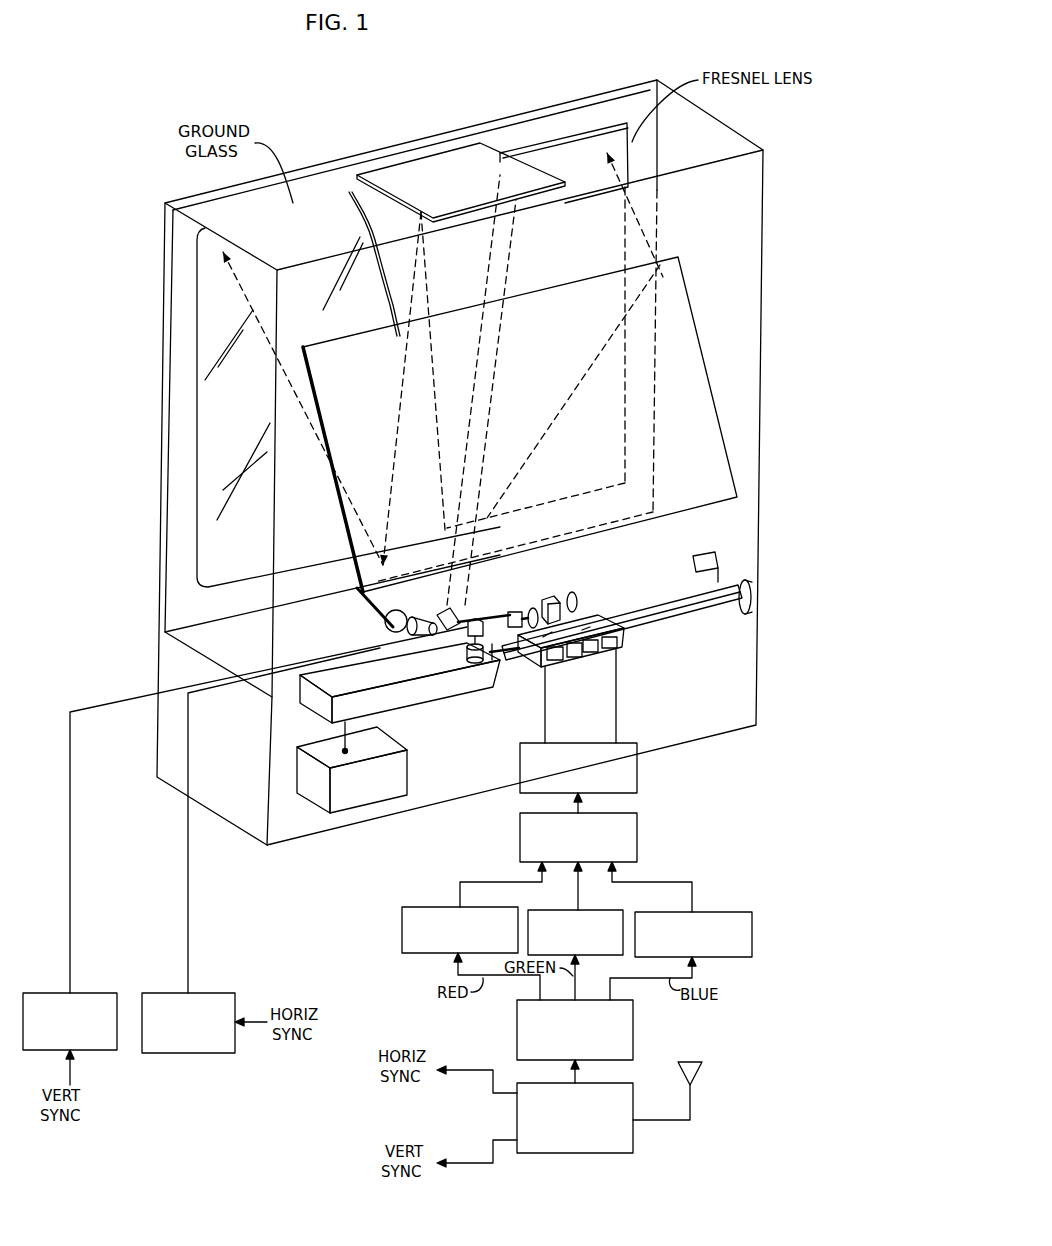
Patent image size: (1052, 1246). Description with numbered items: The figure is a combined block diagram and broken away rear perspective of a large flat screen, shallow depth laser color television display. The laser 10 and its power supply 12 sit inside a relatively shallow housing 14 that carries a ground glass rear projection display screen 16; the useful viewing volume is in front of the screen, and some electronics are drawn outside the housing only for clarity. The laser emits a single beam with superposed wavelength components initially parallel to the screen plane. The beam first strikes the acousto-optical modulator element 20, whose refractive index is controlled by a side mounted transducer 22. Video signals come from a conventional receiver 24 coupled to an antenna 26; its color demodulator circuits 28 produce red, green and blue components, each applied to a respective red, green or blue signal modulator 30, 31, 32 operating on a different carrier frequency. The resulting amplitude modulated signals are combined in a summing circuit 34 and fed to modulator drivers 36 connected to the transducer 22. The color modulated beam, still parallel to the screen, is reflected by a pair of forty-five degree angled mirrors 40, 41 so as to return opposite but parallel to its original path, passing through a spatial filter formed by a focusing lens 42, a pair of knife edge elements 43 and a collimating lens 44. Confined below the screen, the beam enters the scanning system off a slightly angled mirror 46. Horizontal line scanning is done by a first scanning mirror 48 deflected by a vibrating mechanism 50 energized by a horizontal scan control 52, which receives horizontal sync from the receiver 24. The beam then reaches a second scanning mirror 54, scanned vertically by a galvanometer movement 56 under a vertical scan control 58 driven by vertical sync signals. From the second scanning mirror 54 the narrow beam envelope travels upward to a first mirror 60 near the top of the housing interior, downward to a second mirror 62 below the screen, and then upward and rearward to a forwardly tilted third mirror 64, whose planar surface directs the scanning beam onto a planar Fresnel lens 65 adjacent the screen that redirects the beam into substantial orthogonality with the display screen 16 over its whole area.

The laser 10 is at (301, 706).
The power supply 12 is at (408, 786).
The housing 14 is at (164, 264).
The display screen 16 is at (325, 207).
The modulator element 20 is at (622, 636).
The transducer 22 is at (570, 660).
The receiver 24 is at (592, 1152).
The antenna 26 is at (691, 1096).
The color demodulator circuits 28 is at (633, 1033).
The red signal modulator 30 is at (436, 906).
The green signal modulator 31 is at (554, 909).
The blue signal modulator 32 is at (709, 911).
The summing circuit 34 is at (637, 855).
The modulator drivers 36 is at (637, 785).
The 45° angled mirror 40 is at (753, 595).
The 45° angled mirror 41 is at (722, 562).
The focusing lens 42 is at (573, 598).
The knife edge elements 43 is at (680, 594).
The collimating lens 44 is at (518, 610).
The slightly angled mirror 46 is at (497, 655).
The first scanning mirror 48 is at (486, 640).
The vibrating mechanism 50 is at (470, 665).
The horizontal scan control 52 is at (209, 993).
The second scanning mirror 54 is at (472, 606).
The galvanometer movement 56 is at (388, 614).
The vertical scan control 58 is at (89, 993).
The first mirror 60 is at (466, 146).
The second mirror 62 is at (370, 596).
The third mirror 64 is at (697, 332).
The Fresnel lens 65 is at (620, 123).